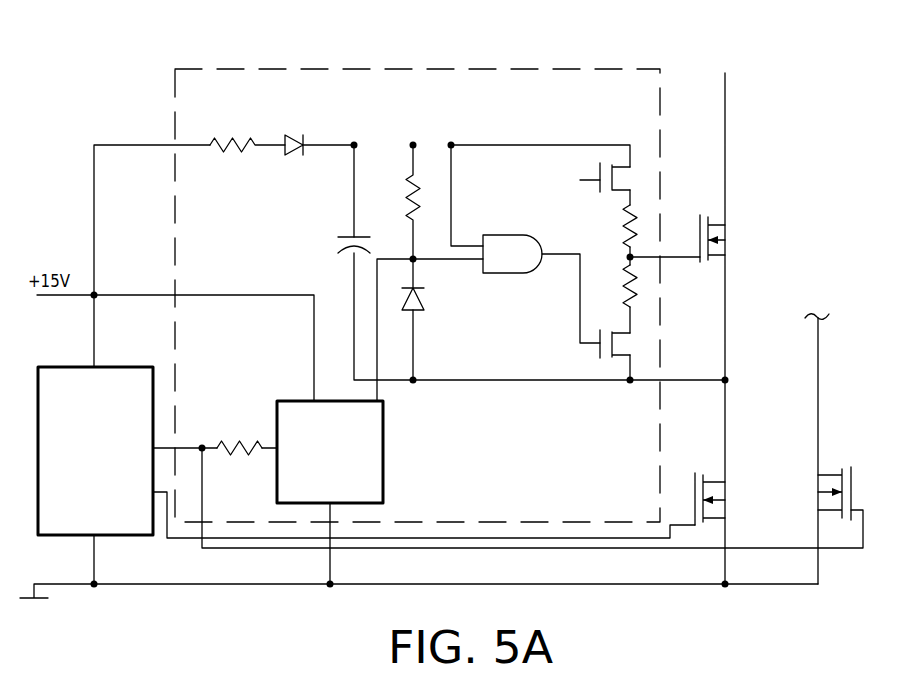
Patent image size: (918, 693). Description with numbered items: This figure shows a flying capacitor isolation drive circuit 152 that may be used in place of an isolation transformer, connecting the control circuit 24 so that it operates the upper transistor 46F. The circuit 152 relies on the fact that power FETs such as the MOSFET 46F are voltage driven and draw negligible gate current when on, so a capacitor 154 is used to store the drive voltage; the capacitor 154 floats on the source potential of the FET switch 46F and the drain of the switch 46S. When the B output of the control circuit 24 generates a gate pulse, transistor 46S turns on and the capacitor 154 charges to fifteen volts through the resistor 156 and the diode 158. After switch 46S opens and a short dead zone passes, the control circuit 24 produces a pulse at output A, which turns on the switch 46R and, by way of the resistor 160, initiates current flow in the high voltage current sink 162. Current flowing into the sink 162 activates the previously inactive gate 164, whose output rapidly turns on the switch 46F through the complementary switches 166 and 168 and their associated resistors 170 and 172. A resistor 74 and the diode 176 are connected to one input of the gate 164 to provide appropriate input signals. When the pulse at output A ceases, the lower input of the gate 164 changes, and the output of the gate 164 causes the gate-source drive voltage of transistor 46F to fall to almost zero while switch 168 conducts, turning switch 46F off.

The flying capacitor isolation drive circuit 152 is at (400, 69).
The resistor 156 is at (253, 148).
The diode 158 is at (297, 152).
The resistor 74 is at (408, 200).
The capacitor 154 is at (338, 242).
The diode 176 is at (426, 300).
The gate 164 is at (512, 254).
The complementary switch 166 is at (597, 173).
The complementary switch 168 is at (597, 350).
The resistor 170 is at (628, 243).
The resistor 172 is at (627, 283).
The upper transistor 46F is at (722, 226).
The switch transistor 46S is at (708, 490).
The switch 46R is at (816, 491).
The control circuit 24 is at (95, 451).
The resistor 160 is at (251, 440).
The high voltage current sink 162 is at (330, 450).